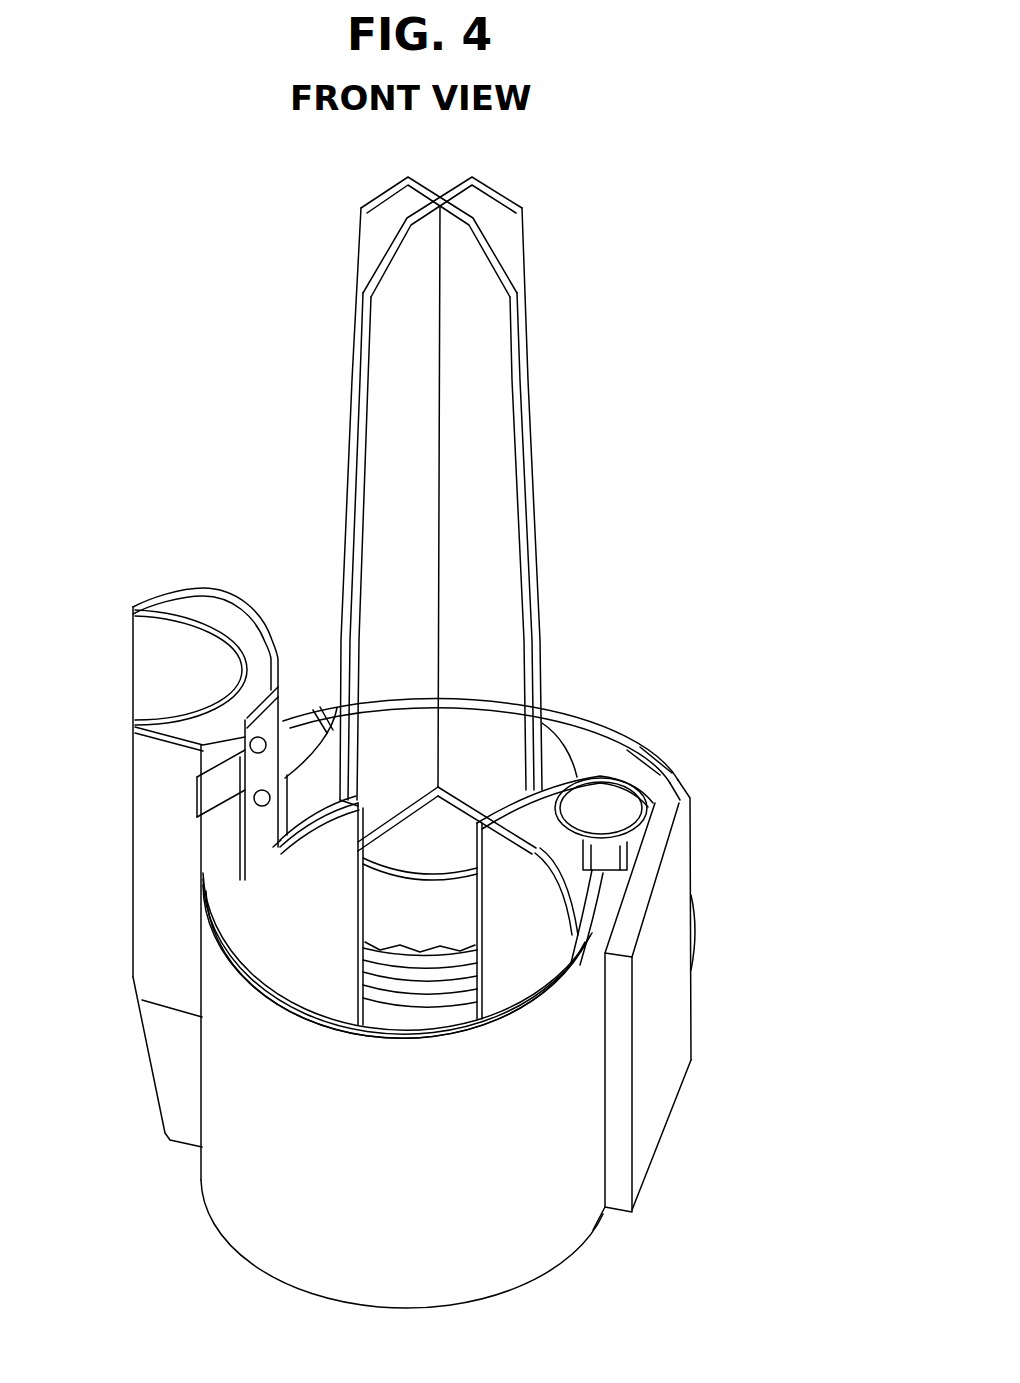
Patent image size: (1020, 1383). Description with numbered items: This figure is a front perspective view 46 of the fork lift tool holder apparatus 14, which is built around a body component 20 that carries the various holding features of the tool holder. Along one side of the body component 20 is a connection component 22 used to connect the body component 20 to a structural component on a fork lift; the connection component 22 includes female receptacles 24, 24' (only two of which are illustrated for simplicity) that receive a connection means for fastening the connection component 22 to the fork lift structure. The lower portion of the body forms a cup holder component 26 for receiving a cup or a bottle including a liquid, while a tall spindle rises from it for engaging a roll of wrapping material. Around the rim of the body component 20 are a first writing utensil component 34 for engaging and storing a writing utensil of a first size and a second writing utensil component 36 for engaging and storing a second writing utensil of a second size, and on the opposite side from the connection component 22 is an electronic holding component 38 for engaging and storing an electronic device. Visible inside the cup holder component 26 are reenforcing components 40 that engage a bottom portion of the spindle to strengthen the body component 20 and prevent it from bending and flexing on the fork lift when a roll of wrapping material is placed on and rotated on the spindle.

The front perspective view 46 is at (705, 133).
The cup holder component 26 is at (528, 425).
The fork lift tool holder apparatus 14 is at (610, 725).
The body component 20 is at (610, 764).
The first writing utensil component 34 is at (617, 834).
The second writing utensil component 36 is at (610, 855).
The electronic holding component 38 is at (668, 1048).
The reenforcing components 40 is at (470, 1017).
The connection component 22 is at (172, 652).
The female receptacle 24 is at (168, 774).
The female receptacle 24' is at (168, 830).